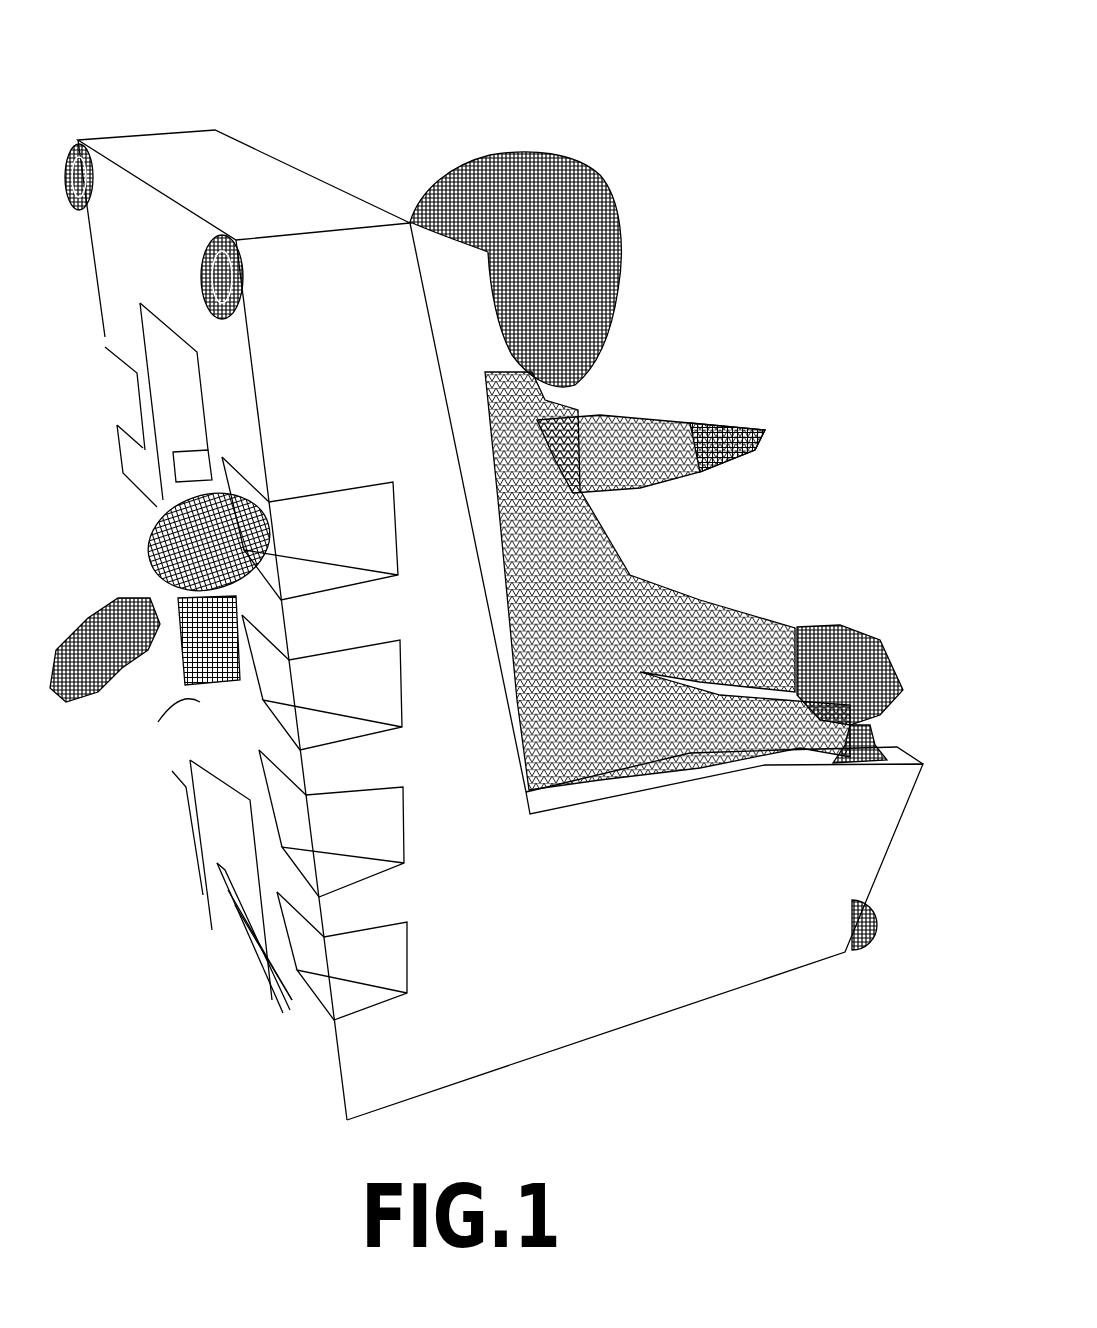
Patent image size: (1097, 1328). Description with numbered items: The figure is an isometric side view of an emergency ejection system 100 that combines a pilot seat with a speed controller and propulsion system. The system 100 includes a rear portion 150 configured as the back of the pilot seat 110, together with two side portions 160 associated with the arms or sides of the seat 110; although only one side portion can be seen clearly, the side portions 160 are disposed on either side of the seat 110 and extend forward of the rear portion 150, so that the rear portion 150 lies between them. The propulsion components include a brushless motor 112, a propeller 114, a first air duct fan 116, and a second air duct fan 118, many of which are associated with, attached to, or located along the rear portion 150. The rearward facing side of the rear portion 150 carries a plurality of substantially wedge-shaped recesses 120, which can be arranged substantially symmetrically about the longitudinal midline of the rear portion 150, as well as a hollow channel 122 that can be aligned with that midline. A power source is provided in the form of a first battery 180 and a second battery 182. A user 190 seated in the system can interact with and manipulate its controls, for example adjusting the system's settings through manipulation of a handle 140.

The emergency ejection system 100 is at (672, 140).
The pilot seat 110 is at (718, 1071).
The brushless motor 112 is at (182, 668).
The propeller 114 is at (98, 690).
The first air duct fan 116 is at (80, 143).
The second air duct fan 118 is at (233, 238).
The wedge-shaped recesses 120 is at (340, 960).
The hollow channel 122 is at (230, 822).
The handle 140 is at (898, 688).
The rear portion 150 is at (102, 1034).
The side portions 160 is at (760, 968).
The first battery 180 is at (222, 899).
The second battery 182 is at (235, 947).
The user 190 is at (640, 432).